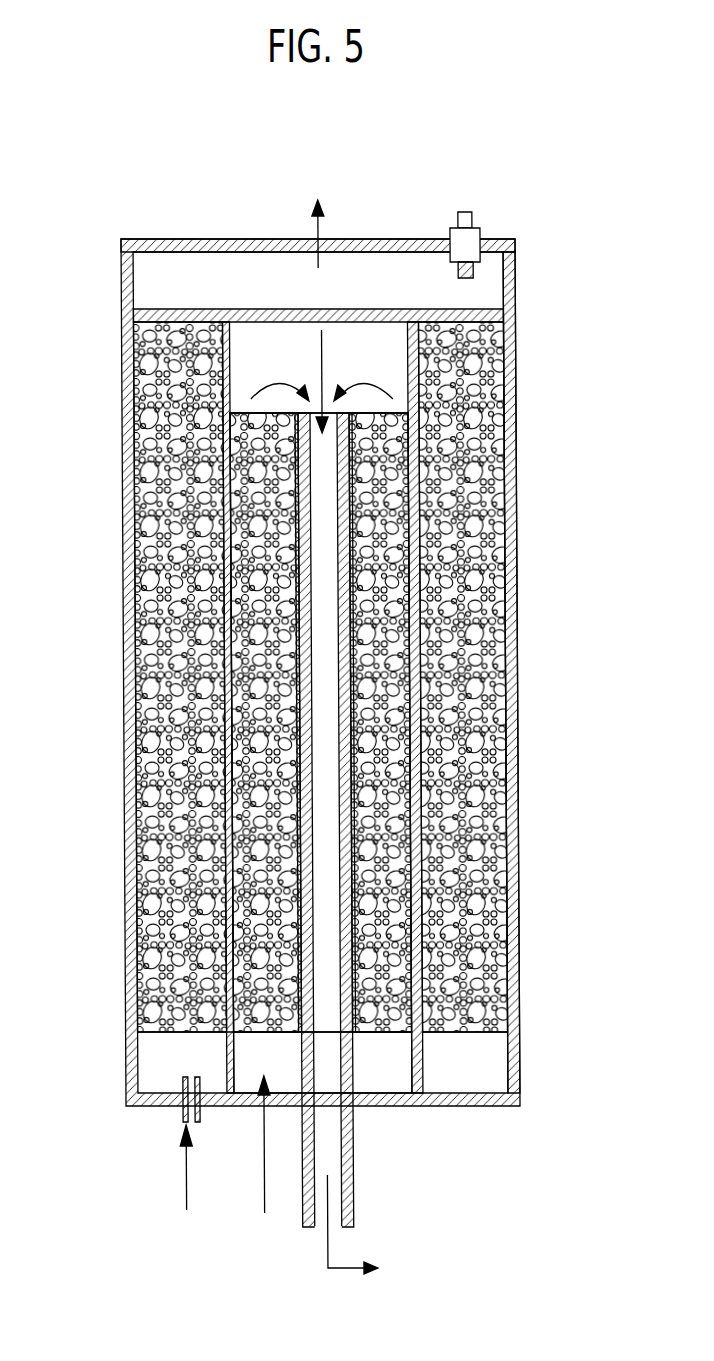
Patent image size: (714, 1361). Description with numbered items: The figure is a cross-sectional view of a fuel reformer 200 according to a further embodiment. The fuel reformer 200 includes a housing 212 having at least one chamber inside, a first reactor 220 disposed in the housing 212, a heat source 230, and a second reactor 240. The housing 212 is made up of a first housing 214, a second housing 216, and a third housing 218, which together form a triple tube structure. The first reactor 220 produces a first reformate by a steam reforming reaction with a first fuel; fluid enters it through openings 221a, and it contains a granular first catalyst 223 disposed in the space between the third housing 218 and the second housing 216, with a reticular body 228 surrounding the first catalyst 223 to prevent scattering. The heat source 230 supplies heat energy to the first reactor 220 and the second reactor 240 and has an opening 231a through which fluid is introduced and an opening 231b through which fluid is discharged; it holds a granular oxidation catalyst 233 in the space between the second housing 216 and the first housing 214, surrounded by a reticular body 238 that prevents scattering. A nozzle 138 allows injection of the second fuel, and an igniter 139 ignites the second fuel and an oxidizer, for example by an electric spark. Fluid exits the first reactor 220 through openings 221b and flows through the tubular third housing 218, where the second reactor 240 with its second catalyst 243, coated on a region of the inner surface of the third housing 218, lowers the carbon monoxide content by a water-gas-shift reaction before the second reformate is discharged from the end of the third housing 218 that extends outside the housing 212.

The fuel reformer 200 is at (152, 170).
The housing 212 is at (530, 254).
The first housing 214 is at (516, 281).
The second housing 216 is at (513, 374).
The third housing 218 is at (350, 1157).
The first reactor 220 is at (410, 740).
The openings 221a is at (245, 1078).
The openings 221b is at (385, 405).
The first catalyst 223 is at (505, 655).
The reticular body 228 is at (255, 1090).
The heat source 230 is at (490, 560).
The opening 231a is at (173, 1100).
The opening 231b is at (332, 229).
The oxidation catalyst 233 is at (495, 527).
The reticular body 238 is at (468, 1040).
The second reactor 240 is at (322, 408).
The second catalyst 243 is at (340, 466).
The nozzle 138 is at (172, 1110).
The igniter 139 is at (470, 212).